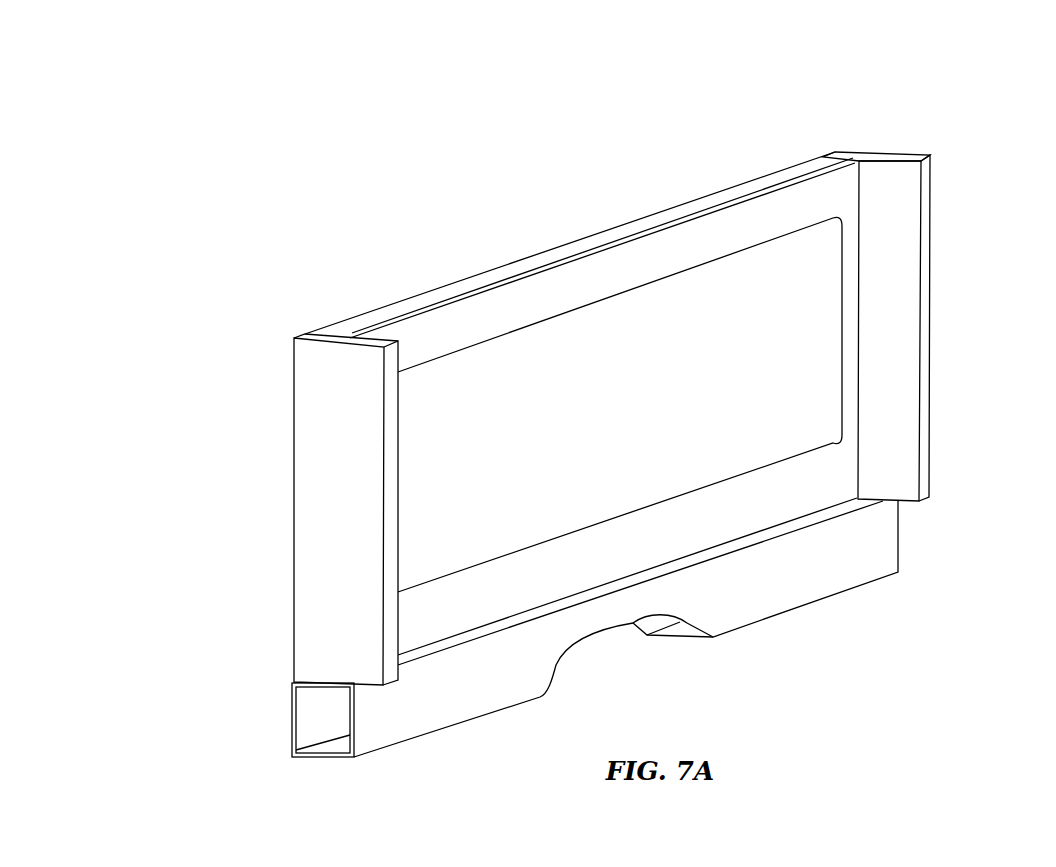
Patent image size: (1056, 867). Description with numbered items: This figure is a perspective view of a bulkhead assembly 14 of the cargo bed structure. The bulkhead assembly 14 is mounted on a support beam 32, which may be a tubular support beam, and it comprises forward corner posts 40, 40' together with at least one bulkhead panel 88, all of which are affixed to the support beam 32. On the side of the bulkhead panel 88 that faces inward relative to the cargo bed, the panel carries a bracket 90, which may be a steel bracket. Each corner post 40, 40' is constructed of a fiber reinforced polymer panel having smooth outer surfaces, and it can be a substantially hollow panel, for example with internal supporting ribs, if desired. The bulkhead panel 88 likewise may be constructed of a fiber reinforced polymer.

The bulkhead assembly 14 is at (787, 157).
The support beam 32 is at (842, 590).
The forward corner post 40 is at (941, 328).
The forward corner post 40' is at (288, 509).
The bulkhead panel 88 is at (440, 286).
The bracket 90 is at (697, 235).